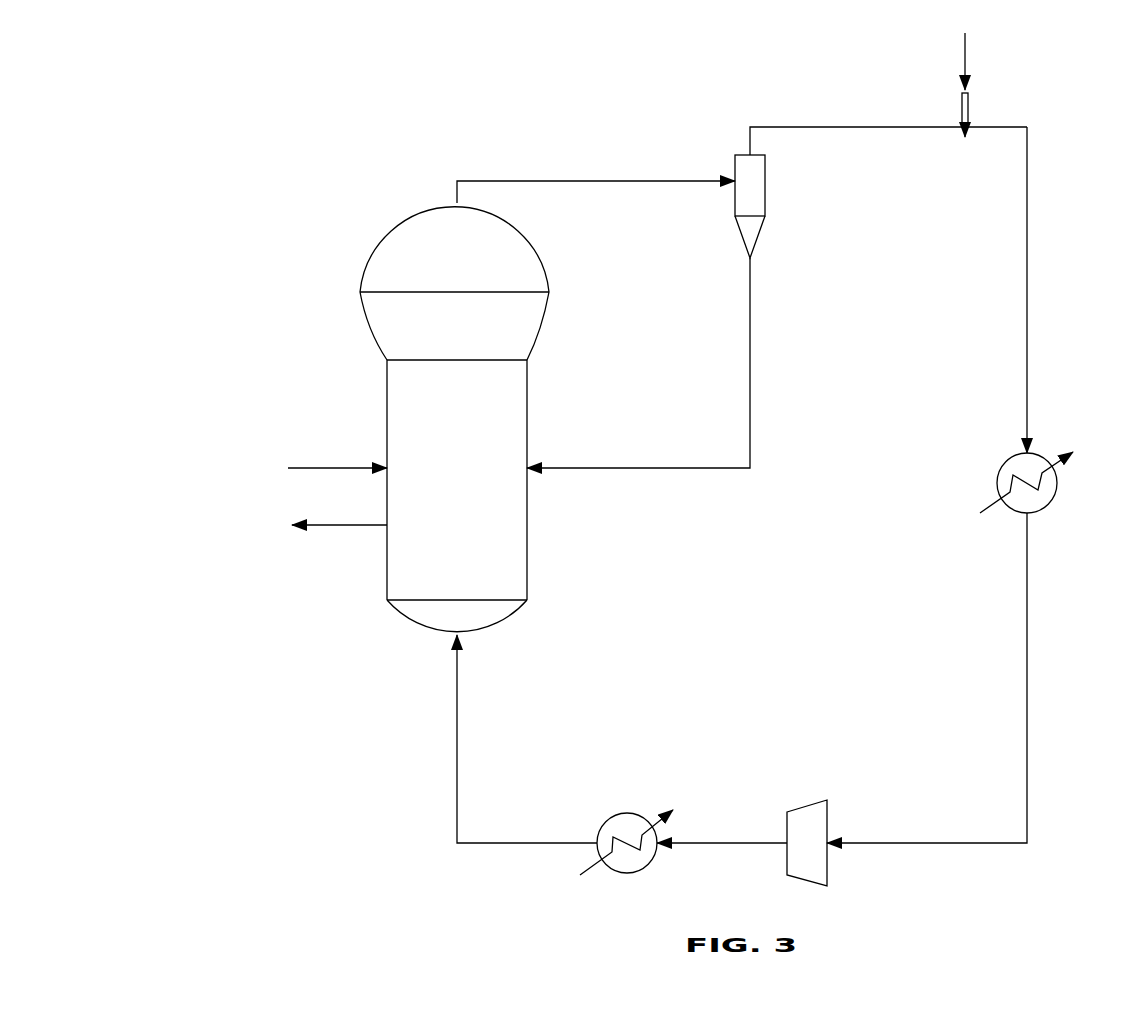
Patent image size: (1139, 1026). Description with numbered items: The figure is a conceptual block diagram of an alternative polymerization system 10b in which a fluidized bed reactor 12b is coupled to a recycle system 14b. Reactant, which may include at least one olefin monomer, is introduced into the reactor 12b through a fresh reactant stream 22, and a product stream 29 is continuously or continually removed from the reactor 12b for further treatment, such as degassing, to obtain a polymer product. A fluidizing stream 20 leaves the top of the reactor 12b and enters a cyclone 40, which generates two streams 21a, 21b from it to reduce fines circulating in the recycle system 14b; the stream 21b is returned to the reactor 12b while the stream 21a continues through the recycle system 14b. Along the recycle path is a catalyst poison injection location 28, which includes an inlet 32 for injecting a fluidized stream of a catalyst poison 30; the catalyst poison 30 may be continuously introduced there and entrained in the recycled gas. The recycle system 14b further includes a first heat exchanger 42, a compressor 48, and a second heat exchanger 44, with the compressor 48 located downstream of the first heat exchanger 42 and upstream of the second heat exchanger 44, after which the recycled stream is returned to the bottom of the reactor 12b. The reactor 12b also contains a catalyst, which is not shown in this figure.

The alternative polymerization system 10b is at (224, 124).
The fluidized bed reactor 12b is at (387, 383).
The fluidizing stream 20 is at (510, 181).
The cyclone 40 is at (768, 195).
The stream 21a is at (748, 145).
The recycle system 14b is at (893, 125).
The catalyst poison 30 is at (966, 52).
The inlet 32 is at (968, 112).
The catalyst poison injection location 28 is at (972, 132).
The stream 21b is at (752, 326).
The fresh reactant stream 22 is at (320, 468).
The product stream 29 is at (330, 525).
The first heat exchanger 42 is at (1053, 497).
The compressor 48 is at (832, 870).
The second heat exchanger 44 is at (620, 815).